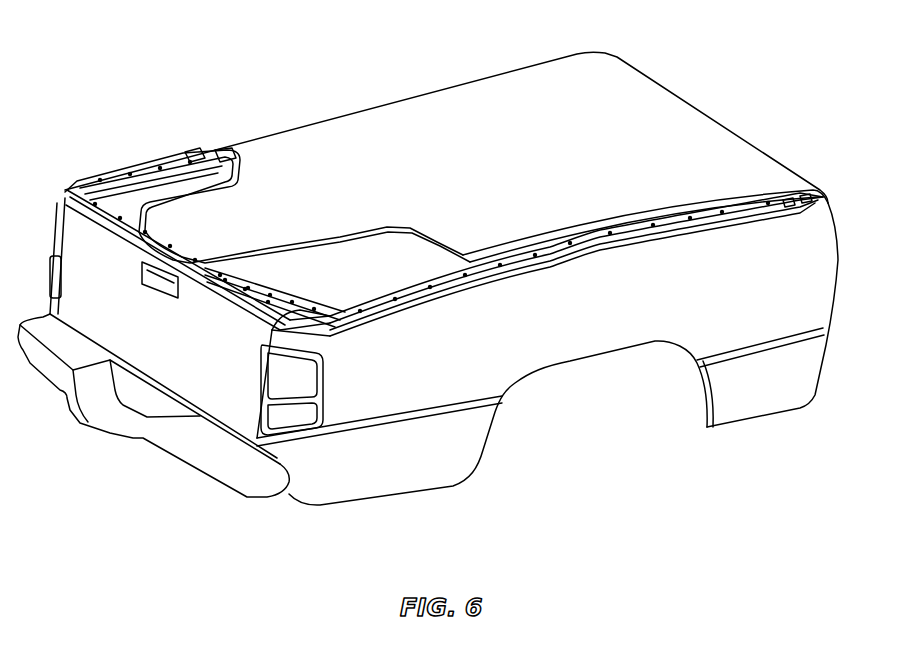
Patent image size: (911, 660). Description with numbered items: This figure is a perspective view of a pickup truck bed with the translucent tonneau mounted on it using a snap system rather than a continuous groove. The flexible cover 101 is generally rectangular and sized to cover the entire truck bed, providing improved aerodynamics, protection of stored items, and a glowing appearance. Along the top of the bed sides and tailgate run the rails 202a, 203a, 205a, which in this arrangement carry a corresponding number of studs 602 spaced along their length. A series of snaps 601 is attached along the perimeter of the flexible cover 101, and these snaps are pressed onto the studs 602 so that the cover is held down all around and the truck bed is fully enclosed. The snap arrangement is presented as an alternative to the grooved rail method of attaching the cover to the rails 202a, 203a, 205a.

The flexible cover 101 is at (677, 127).
The rail 202a is at (117, 173).
The rail 203a is at (417, 297).
The rail 205a is at (230, 303).
The snap 601 is at (228, 157).
The stud 602 is at (83, 227).